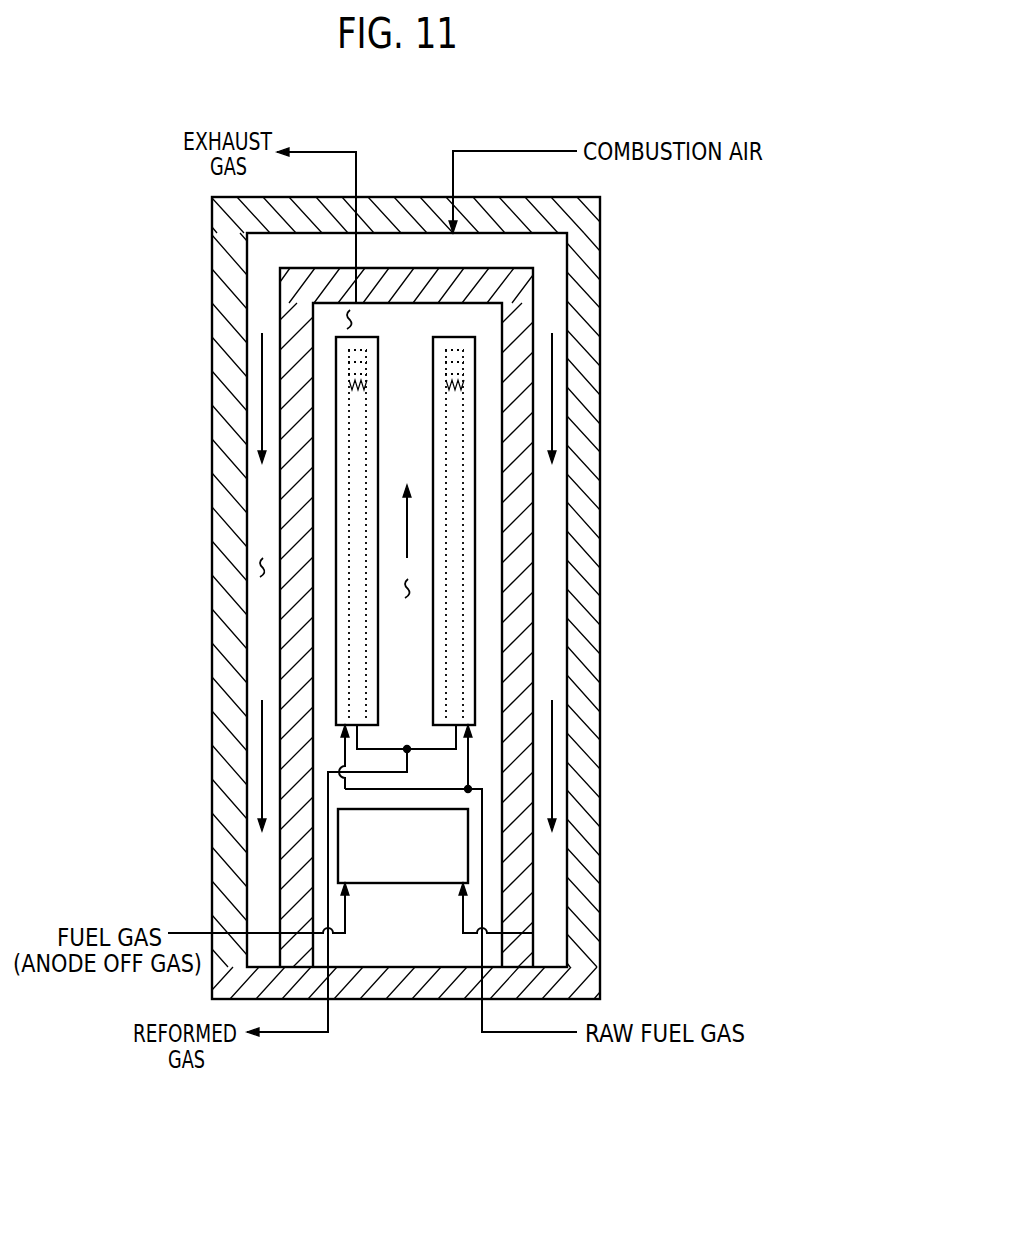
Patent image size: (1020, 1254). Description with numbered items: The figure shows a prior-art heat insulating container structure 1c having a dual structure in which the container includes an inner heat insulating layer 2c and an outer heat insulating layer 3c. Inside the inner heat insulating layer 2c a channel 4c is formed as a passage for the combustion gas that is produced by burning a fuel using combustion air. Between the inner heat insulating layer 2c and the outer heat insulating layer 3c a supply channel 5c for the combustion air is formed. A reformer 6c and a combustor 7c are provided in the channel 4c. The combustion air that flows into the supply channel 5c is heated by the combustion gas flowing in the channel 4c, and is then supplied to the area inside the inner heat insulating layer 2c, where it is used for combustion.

The housing 1c is at (605, 230).
The inner heat insulating layer 2c is at (520, 405).
The outer heat insulating layer 3c is at (583, 364).
The channel 4c is at (403, 589).
The supply channel 5c is at (258, 570).
The reformer 6c is at (479, 559).
The combustor 7c is at (470, 830).